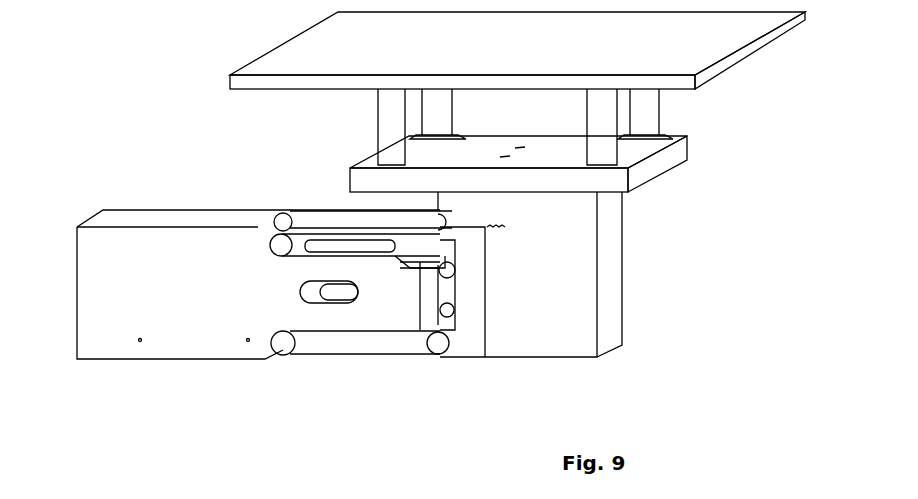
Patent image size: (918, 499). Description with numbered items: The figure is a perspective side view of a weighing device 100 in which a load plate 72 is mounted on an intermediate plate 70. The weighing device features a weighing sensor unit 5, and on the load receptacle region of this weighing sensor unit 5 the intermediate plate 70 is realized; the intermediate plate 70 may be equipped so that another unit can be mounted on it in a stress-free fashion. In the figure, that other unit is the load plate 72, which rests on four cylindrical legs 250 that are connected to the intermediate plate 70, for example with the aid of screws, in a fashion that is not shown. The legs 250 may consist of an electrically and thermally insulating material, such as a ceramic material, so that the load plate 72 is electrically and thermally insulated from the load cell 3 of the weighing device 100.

The system / assembly 100 is at (178, 156).
The load cell 3 is at (240, 208).
The weighing sensor unit 5 is at (502, 339).
The intermediate plate 70 is at (643, 172).
The load plate 72 is at (715, 53).
The cylindrical legs 250 is at (395, 122).